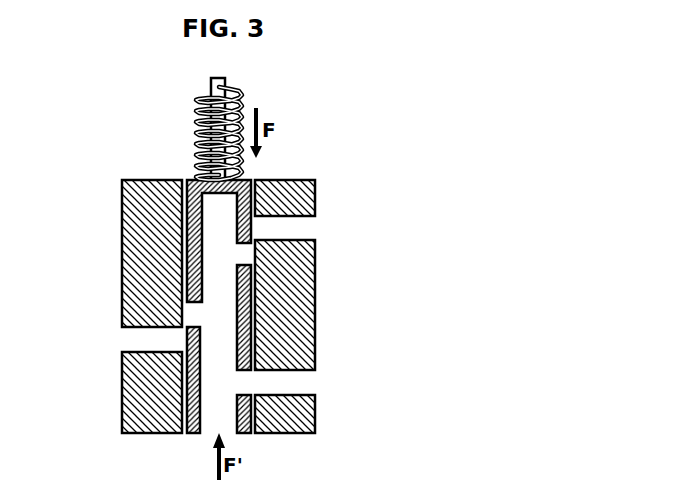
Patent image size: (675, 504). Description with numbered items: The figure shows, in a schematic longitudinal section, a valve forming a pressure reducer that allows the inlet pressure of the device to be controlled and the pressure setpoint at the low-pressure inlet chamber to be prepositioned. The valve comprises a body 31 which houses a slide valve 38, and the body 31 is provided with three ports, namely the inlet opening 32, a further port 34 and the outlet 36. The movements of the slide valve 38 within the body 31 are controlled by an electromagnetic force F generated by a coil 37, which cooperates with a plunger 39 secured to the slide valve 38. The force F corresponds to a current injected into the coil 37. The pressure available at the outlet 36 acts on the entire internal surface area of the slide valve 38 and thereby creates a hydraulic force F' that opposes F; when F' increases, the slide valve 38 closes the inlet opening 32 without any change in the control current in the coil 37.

The body 31 is at (302, 327).
The inlet opening 32 is at (118, 340).
The port 34 is at (320, 228).
The outlet 36 is at (320, 383).
The coil 37 is at (191, 140).
The slide valve 38 is at (238, 326).
The plunger 39 is at (226, 88).